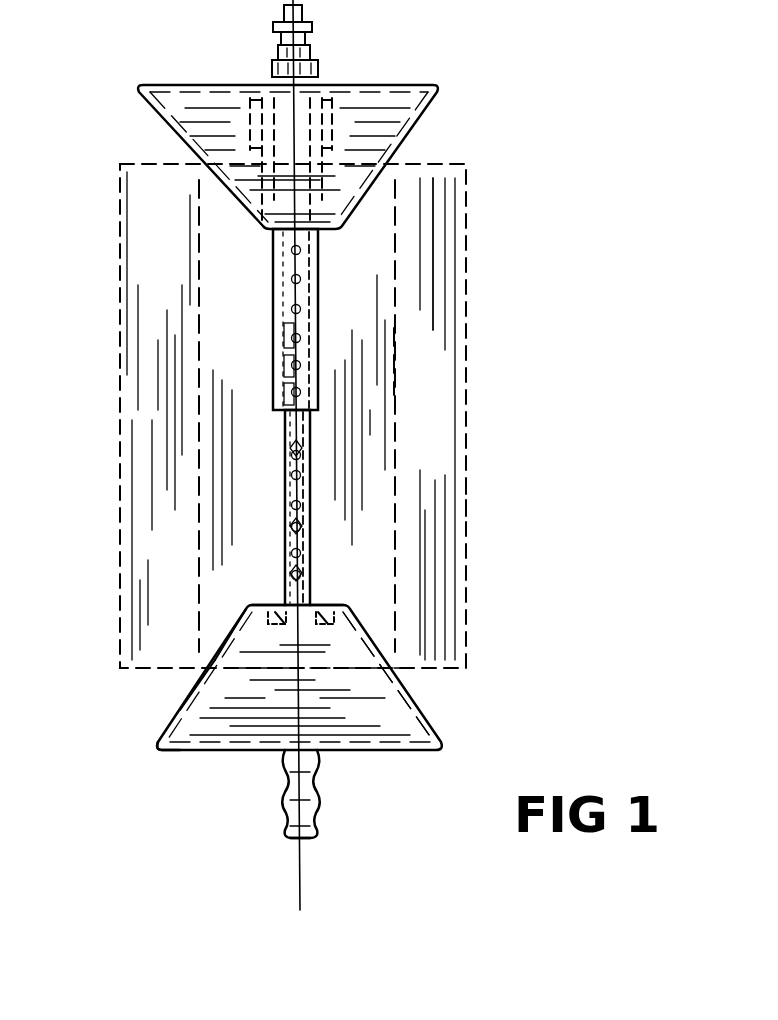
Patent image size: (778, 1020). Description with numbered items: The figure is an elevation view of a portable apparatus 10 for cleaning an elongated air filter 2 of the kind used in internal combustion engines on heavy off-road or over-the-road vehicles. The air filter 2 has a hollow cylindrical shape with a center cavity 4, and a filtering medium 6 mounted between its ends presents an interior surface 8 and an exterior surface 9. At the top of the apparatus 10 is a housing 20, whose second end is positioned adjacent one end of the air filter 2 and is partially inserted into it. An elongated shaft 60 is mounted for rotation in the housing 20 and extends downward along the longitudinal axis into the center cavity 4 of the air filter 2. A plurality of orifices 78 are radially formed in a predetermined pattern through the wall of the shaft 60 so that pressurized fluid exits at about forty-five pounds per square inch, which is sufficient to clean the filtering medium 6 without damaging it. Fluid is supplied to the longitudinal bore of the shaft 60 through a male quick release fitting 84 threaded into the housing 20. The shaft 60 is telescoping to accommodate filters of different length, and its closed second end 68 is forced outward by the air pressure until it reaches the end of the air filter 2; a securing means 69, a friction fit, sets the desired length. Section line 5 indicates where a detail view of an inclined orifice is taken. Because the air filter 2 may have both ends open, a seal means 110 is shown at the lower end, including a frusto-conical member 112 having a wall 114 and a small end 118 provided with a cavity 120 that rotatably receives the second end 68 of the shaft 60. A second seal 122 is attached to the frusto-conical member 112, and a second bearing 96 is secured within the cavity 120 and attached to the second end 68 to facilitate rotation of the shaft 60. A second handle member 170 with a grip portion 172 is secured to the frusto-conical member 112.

The portable apparatus 10 is at (538, 89).
The air filter 2 is at (474, 252).
The center cavity 4 is at (382, 472).
The section line 5 is at (320, 200).
The filtering medium 6 is at (413, 357).
The interior surface 8 is at (395, 328).
The exterior surface 9 is at (470, 498).
The housing 20 is at (418, 85).
The elongated shaft 60 is at (273, 388).
The second end of the elongated shaft 68 is at (340, 605).
The securing means 69 is at (338, 401).
The orifices 78 is at (291, 309).
The male quick release fitting 84 is at (305, 54).
The second bearing 96 is at (262, 605).
The seal means 110 is at (445, 730).
The frusto-conical member 112 is at (178, 718).
The wall 114 is at (198, 690).
The small end 118 is at (345, 605).
The cavity 120 is at (415, 688).
The second seal 122 is at (150, 735).
The second handle member 170 is at (314, 835).
The grip portion 172 is at (316, 815).